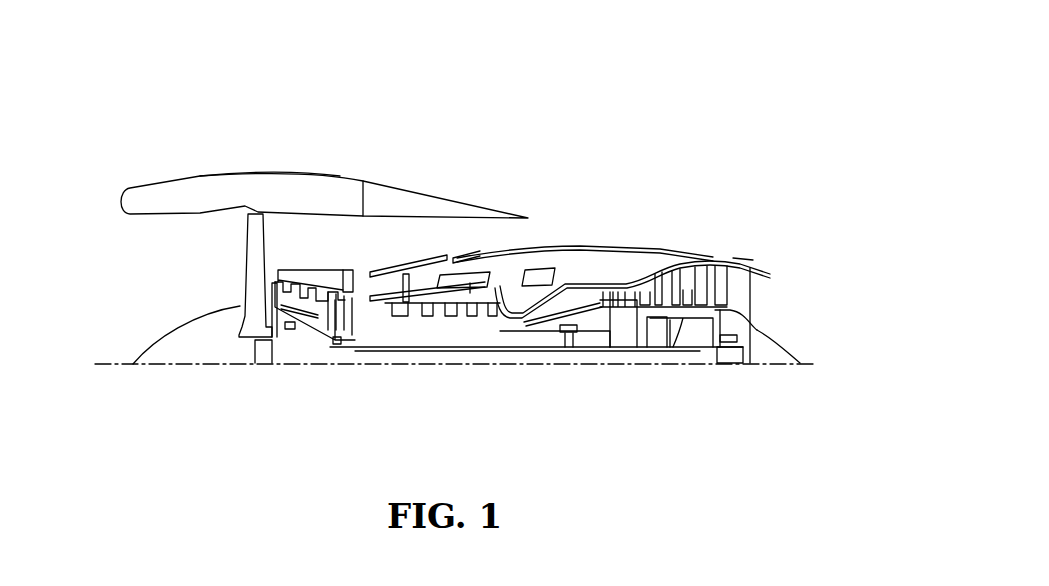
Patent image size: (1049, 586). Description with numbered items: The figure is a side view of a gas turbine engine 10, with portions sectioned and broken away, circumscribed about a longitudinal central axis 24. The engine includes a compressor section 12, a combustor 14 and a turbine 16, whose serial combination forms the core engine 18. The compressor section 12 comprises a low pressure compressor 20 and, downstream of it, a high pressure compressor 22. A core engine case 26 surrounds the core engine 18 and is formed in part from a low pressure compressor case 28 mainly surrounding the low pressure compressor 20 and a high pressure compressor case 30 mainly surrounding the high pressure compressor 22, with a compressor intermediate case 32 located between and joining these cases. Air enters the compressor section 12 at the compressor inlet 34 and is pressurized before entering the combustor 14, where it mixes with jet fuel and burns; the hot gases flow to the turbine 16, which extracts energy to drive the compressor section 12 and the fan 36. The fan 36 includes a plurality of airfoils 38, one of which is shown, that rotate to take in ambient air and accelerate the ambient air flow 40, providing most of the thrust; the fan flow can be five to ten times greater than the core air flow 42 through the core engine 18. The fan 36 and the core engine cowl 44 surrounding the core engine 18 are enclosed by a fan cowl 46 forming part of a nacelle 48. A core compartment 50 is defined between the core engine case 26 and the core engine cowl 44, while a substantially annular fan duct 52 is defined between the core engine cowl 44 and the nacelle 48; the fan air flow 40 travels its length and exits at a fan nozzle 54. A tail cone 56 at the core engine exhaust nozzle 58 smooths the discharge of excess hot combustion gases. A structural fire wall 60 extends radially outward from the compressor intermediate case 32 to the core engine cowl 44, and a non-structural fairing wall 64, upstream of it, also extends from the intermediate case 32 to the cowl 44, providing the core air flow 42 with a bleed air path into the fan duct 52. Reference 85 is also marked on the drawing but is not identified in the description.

The gas turbine engine 10 is at (652, 95).
The compressor section 12 is at (411, 341).
The combustor 14 is at (577, 305).
The turbine 16 is at (657, 340).
The core engine 18 is at (569, 258).
The low pressure compressor 20 is at (322, 300).
The high pressure compressor 22 is at (407, 275).
The longitudinal central axis 24 is at (797, 361).
The core engine case 26 is at (651, 368).
The low pressure compressor case 28 is at (300, 329).
The high pressure compressor case 30 is at (452, 298).
The compressor intermediate case 32 is at (340, 302).
The compressor inlet 34 is at (276, 290).
The fan 36 is at (205, 374).
The airfoil 38 is at (245, 230).
The ambient air flow 40 is at (155, 247).
The core air flow 42 is at (210, 293).
The core engine cowl 44 is at (629, 238).
The fan cowl 46 is at (183, 213).
The nacelle 48 is at (243, 176).
The core compartment 50 is at (605, 280).
The fan duct 52 is at (449, 251).
The fan nozzle 54 is at (527, 232).
The tail cone 56 is at (763, 348).
The core engine exhaust nozzle 58 is at (762, 296).
The structural fire wall 60 is at (350, 297).
The non-structural fairing wall 64 is at (335, 268).
The compressor rotor 85 is at (405, 307).